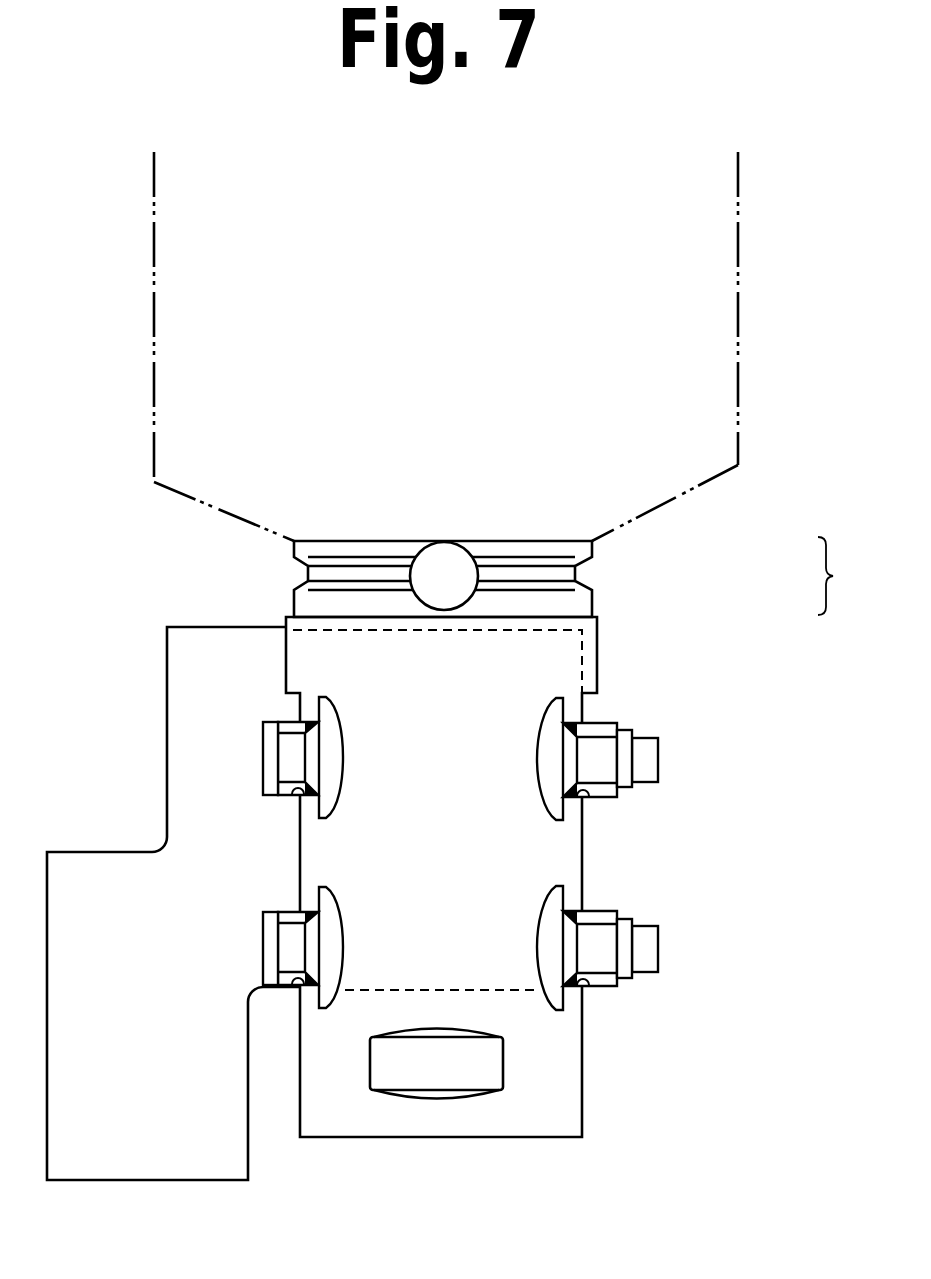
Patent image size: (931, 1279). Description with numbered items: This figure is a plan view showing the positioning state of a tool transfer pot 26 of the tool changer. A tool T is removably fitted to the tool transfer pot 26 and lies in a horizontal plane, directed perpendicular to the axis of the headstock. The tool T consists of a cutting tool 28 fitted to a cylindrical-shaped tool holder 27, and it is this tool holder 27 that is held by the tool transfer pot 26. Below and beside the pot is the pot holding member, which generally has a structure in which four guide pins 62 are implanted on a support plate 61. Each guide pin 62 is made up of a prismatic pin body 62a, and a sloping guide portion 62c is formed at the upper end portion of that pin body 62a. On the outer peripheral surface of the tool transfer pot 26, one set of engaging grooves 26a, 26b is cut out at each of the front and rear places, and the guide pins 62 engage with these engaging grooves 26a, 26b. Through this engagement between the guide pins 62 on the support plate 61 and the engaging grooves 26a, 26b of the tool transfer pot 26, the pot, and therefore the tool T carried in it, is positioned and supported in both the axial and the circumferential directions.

The tool T is at (839, 576).
The tool holder 27 is at (592, 598).
The cutting tool 28 is at (714, 477).
The tool transfer pot 26 is at (590, 1079).
The engaging groove 26a is at (292, 792).
The engaging groove 26b is at (290, 985).
The support plate 61 is at (80, 852).
The guide pin 62 is at (258, 755).
The pin body 62a is at (263, 735).
The sloping guide portion 62c is at (313, 757).